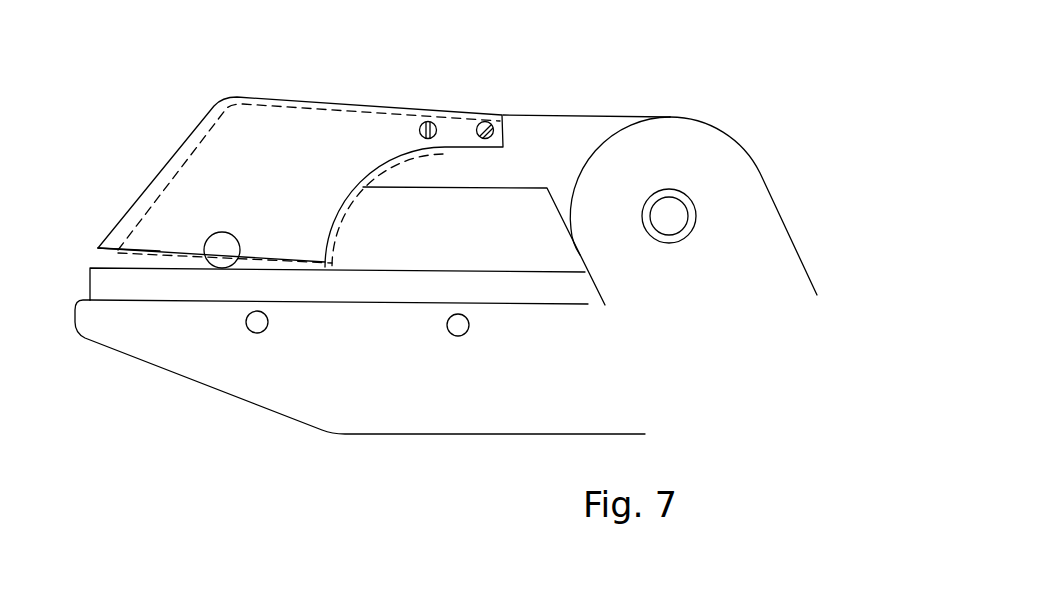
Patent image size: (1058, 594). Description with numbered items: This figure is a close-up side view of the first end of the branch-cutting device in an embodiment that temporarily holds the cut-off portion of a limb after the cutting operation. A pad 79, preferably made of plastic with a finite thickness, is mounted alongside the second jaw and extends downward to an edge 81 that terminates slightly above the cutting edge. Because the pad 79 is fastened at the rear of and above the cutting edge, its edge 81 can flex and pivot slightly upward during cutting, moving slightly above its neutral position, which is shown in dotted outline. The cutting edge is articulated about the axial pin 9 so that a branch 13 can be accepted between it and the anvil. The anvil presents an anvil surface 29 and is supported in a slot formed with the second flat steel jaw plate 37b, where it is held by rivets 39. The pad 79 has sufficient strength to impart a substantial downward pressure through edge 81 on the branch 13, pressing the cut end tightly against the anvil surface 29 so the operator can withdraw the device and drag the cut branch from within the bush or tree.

The axial pin 9 is at (673, 192).
The branch 13 is at (207, 263).
The anvil surface 29 is at (415, 270).
The second flat steel jaw plate 37b is at (368, 382).
The rivets 39 is at (253, 330).
The pad 79 is at (233, 152).
The edge 81 is at (150, 250).